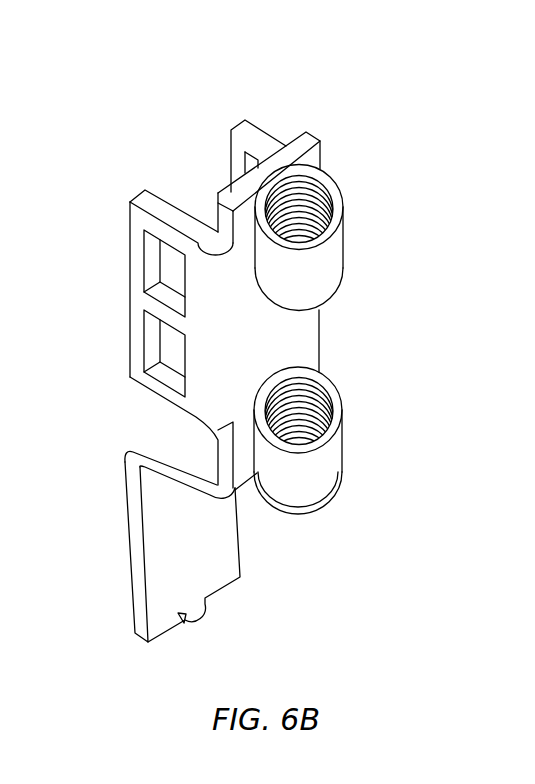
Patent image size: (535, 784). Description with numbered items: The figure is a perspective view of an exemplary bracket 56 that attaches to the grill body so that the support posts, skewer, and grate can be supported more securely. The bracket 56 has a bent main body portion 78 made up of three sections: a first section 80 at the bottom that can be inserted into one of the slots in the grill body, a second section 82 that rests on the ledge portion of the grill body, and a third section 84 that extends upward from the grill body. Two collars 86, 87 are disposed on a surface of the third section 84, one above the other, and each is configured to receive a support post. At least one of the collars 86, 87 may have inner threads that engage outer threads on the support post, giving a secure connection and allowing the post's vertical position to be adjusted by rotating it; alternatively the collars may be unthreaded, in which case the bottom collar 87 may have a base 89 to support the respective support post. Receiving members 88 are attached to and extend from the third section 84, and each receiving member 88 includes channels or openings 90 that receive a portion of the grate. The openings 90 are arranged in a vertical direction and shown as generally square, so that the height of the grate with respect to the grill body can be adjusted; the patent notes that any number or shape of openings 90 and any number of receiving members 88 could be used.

The bracket 56 is at (323, 72).
The main body portion 78 is at (352, 150).
The first section 80 is at (223, 548).
The second section 82 is at (175, 440).
The third section 84 is at (308, 342).
The collar 86 is at (327, 263).
The bottom collar 87 is at (328, 463).
The receiving member 88 is at (247, 117).
The base 89 is at (323, 507).
The channel or opening 90 is at (172, 267).